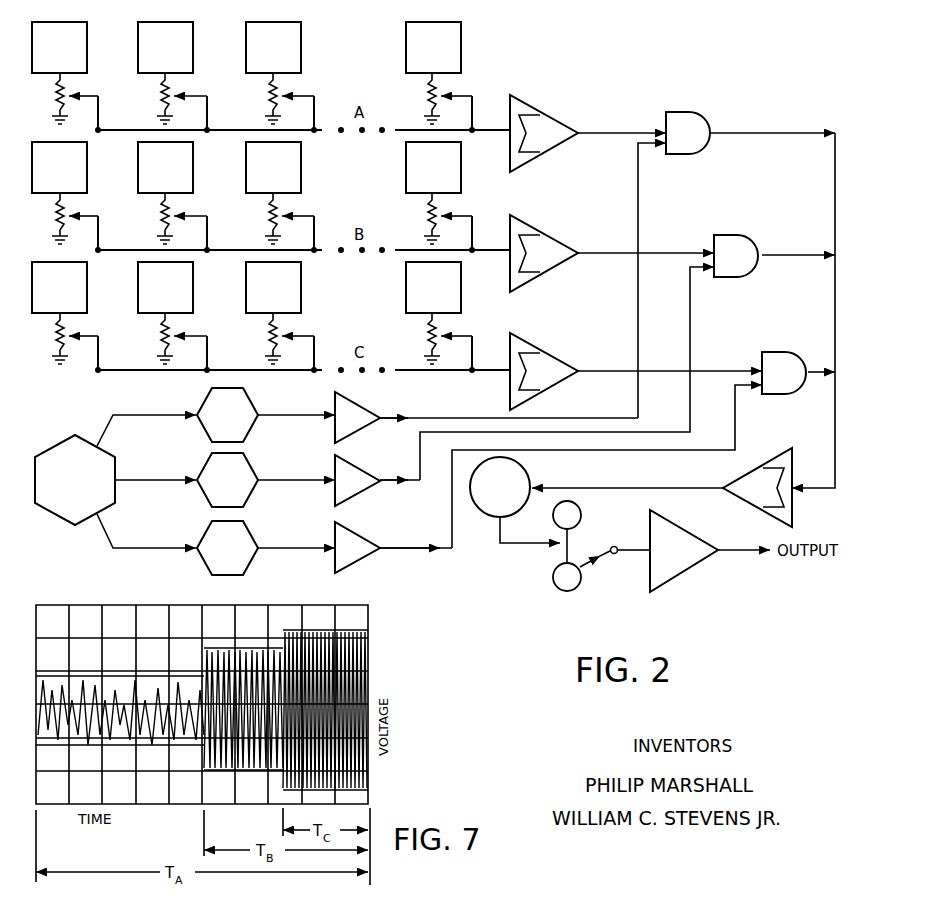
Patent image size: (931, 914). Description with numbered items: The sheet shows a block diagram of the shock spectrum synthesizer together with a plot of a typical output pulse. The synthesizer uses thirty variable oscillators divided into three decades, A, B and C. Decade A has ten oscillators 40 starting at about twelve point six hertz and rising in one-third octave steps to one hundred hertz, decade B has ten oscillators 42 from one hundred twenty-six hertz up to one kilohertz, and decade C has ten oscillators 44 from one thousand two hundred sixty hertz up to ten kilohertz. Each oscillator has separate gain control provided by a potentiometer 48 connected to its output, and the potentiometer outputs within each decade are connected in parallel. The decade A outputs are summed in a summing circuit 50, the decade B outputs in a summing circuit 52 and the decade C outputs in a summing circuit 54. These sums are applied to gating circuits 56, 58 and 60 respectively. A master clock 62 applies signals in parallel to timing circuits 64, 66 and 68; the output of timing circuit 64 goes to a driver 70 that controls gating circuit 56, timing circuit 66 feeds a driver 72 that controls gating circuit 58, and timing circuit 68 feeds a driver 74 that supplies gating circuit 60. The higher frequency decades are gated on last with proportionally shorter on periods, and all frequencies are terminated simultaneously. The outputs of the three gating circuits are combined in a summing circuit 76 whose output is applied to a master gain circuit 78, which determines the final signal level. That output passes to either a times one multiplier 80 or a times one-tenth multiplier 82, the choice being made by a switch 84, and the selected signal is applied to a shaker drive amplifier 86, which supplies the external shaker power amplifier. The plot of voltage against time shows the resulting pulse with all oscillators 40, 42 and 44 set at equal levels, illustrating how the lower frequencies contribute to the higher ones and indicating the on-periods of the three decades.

The oscillators 40 is at (66, 6).
The oscillators 42 is at (87, 168).
The oscillators 44 is at (87, 288).
The potentiometers 48 is at (44, 103).
The summing circuit 50 is at (545, 105).
The summing circuit 52 is at (545, 225).
The summing circuit 54 is at (545, 343).
The gating circuit 56 is at (694, 112).
The gating circuit 58 is at (742, 235).
The gating circuit 60 is at (788, 352).
The master clock 62 is at (64, 436).
The timing circuit 64 is at (193, 400).
The timing circuit 66 is at (193, 462).
The timing circuit 68 is at (193, 529).
The driver 70 is at (334, 402).
The driver 72 is at (334, 465).
The driver 74 is at (334, 532).
The summing circuit 76 is at (758, 450).
The master gain circuit 78 is at (529, 470).
The times one multiplier 80 is at (570, 540).
The times one-tenth multiplier 82 is at (557, 588).
The switch 84 is at (609, 562).
The shaker drive amplifier 86 is at (680, 528).